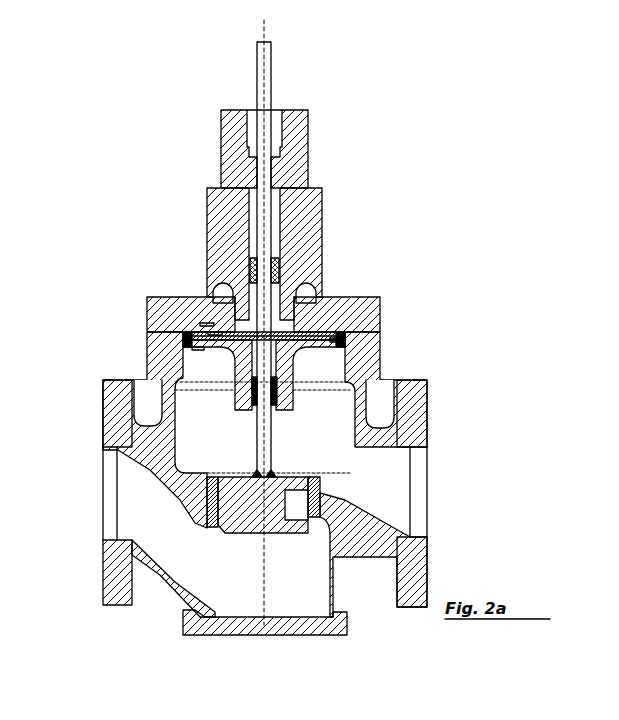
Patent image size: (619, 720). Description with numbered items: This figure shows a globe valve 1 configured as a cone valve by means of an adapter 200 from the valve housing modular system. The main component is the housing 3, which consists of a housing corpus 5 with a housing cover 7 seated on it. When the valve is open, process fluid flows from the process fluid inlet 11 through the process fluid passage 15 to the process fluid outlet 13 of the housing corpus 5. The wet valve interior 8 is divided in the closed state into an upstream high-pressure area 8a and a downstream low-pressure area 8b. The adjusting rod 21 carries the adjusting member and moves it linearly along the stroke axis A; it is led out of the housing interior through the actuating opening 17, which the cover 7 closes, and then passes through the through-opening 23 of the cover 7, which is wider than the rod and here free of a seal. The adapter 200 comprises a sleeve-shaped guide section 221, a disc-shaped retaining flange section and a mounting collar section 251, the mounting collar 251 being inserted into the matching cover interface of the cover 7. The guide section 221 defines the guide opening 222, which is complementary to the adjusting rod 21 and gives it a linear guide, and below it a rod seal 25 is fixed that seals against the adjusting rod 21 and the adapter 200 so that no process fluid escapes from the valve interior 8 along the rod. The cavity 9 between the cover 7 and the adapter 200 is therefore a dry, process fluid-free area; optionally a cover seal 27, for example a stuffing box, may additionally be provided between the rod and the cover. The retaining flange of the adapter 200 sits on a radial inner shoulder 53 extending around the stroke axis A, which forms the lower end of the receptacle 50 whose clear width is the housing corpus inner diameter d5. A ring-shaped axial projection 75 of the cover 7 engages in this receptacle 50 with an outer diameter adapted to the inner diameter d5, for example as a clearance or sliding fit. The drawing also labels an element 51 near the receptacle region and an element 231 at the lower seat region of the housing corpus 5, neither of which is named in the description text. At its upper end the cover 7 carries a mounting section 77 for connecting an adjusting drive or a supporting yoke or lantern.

The globe valve 1 is at (527, 140).
The housing 3 is at (428, 307).
The housing corpus 5 is at (403, 375).
The housing cover 7 is at (358, 325).
The valve interior 8 is at (292, 396).
The high-pressure area 8a is at (223, 563).
The low-pressure area 8b is at (387, 492).
The cavity 9 is at (340, 297).
The process fluid inlet 11 is at (103, 490).
The process fluid outlet 13 is at (420, 519).
The process fluid passage 15 is at (305, 545).
The actuating opening 17 is at (222, 323).
The adjusting rod 21 is at (270, 82).
The through-opening 23 is at (285, 168).
The rod seal 25 is at (283, 450).
The cover seal 27 is at (282, 270).
The receptacle 50 is at (200, 361).
The seal 51 is at (347, 336).
The radial inner shoulder 53 is at (353, 347).
The axial projection 75 is at (200, 357).
The mounting section 77 is at (305, 136).
The cone valve configuration adapter 200 is at (128, 718).
The guide section 221 is at (247, 385).
The guide opening 222 is at (292, 400).
The seat ring 231 is at (228, 488).
The mounting collar section 251 is at (350, 341).
The stroke axis A is at (258, 56).
The housing corpus inner diameter d5 is at (210, 325).